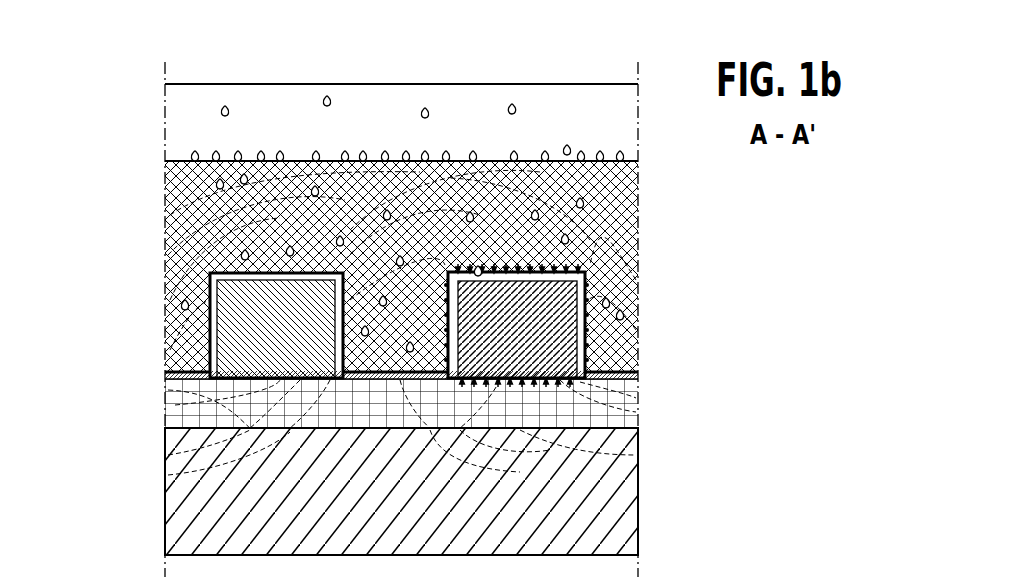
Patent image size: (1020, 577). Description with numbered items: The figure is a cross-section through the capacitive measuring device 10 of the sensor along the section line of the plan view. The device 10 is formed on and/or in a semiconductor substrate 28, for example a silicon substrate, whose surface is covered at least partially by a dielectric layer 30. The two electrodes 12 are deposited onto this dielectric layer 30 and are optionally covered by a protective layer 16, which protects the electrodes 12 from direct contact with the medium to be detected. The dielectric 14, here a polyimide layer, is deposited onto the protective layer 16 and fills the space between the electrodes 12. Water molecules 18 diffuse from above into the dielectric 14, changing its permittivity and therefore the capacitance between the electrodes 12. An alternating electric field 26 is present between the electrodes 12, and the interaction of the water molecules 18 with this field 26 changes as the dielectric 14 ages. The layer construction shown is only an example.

The capacitive measuring device 10 is at (112, 260).
The electrodes 12 is at (235, 326).
The dielectric 14 is at (636, 197).
The protective layer 16 is at (636, 378).
The water molecules 18 is at (322, 100).
The alternating electric field 26 is at (637, 247).
The semiconductor substrate 28 is at (190, 508).
The dielectric layer 30 is at (185, 408).